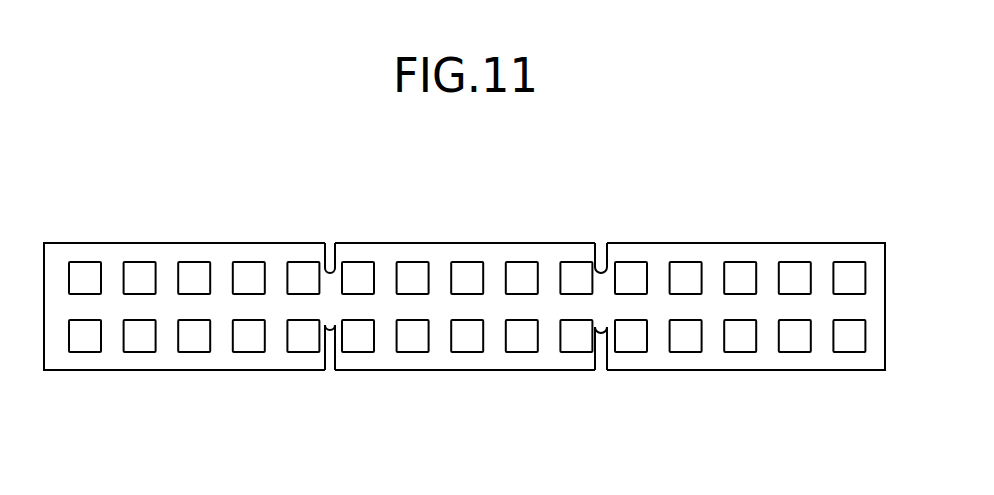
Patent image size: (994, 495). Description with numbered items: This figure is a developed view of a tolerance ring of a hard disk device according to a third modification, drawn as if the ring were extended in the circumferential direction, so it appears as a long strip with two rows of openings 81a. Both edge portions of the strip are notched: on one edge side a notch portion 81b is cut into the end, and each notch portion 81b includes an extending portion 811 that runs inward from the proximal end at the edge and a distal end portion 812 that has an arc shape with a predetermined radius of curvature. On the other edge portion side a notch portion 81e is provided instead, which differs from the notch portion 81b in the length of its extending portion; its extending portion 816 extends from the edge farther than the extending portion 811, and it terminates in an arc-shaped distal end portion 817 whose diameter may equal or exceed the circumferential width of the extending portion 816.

The opening 81a is at (192, 272).
The notch portion 81b is at (453, 297).
The extending portion 811 is at (333, 272).
The distal end portion 812 is at (342, 282).
The notch portion 81e is at (340, 394).
The extending portion 816 is at (333, 352).
The distal end portion 817 is at (333, 313).